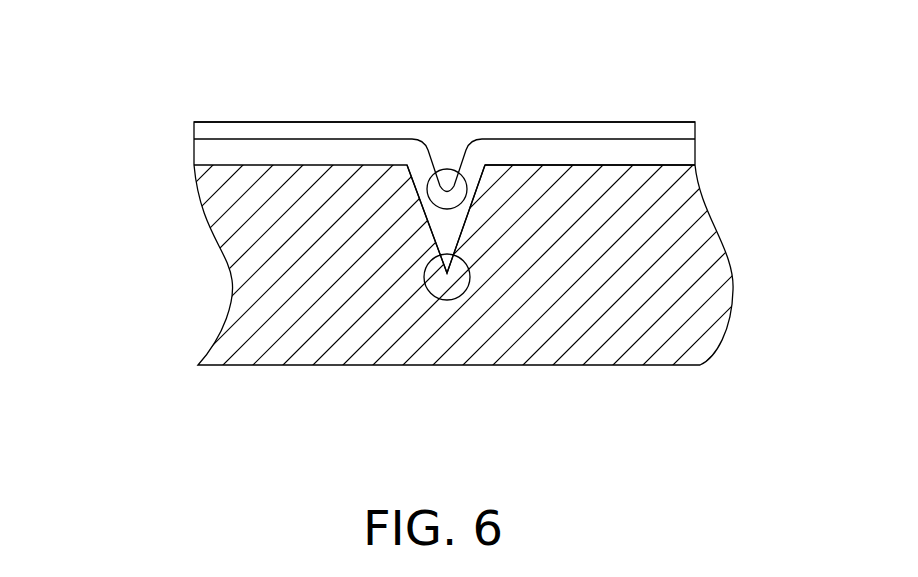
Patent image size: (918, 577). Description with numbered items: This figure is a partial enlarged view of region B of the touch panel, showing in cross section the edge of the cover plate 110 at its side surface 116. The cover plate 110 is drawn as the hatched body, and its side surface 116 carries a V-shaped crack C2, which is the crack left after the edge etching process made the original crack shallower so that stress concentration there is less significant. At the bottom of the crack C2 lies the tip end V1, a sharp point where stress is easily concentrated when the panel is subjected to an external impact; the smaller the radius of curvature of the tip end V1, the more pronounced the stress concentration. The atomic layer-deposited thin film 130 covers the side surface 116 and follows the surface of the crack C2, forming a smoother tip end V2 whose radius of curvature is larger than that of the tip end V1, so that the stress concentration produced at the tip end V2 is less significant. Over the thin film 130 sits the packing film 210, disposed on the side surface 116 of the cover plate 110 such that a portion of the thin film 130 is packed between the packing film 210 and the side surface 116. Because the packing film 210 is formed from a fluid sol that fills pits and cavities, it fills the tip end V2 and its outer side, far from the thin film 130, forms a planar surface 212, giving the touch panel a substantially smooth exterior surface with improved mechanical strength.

The cover plate 110 is at (703, 257).
The side surface 116 is at (644, 150).
The atomic layer-deposited thin film 130 is at (573, 150).
The packing film 210 is at (240, 130).
The planar surface 212 is at (310, 118).
The crack C2 is at (410, 170).
The tip end V1 is at (425, 290).
The tip end V2 is at (449, 168).
The region B is at (788, 409).